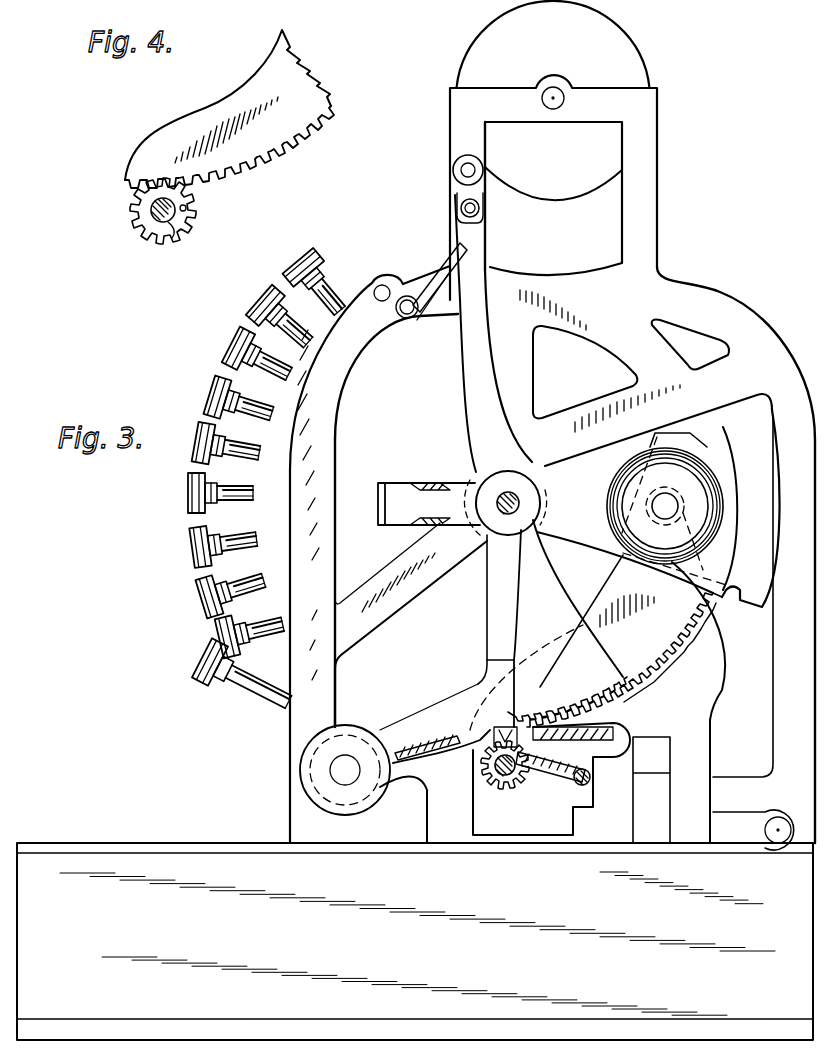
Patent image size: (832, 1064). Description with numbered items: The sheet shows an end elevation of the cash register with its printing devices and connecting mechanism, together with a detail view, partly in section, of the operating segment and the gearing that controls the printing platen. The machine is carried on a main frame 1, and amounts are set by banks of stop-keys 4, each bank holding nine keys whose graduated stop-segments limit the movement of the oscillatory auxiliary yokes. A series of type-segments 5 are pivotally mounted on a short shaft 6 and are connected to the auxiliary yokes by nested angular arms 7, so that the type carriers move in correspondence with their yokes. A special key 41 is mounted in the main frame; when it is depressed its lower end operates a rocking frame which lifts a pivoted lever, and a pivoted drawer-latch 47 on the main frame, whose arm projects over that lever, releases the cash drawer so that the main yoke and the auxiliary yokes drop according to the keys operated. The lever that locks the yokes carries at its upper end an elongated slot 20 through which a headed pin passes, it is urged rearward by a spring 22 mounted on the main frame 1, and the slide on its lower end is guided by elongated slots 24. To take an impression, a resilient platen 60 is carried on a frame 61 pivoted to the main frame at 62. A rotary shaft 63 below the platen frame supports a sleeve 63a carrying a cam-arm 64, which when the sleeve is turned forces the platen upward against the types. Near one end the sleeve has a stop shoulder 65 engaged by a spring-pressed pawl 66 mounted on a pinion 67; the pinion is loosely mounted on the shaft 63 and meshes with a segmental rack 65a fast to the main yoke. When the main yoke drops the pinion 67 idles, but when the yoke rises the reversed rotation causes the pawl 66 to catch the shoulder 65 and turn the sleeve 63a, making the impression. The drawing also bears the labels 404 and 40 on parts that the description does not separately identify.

In FIG. 3, the frame head 404 is at (570, 63).
In FIG. 3, the drawer-latch 47 is at (462, 171).
In FIG. 3, the pendulum arm 40 is at (460, 191).
In FIG. 3, the elongated slots 24 is at (460, 210).
In FIG. 3, the elongated slot 20 is at (477, 203).
In FIG. 3, the spring 22 is at (446, 262).
In FIG. 3, the stop-keys 4 is at (245, 342).
In FIG. 3, the main frame 1 is at (197, 588).
In FIG. 3, the special key 41 is at (254, 690).
In FIG. 3, the nested angular arms 7 is at (378, 500).
In FIG. 3, the short shaft 6 is at (522, 506).
In FIG. 3, the type-segments 5 is at (591, 625).
In FIG. 4, the segmental rack 65a is at (290, 143).
In FIG. 3, the segmental rack 65a is at (652, 690).
In FIG. 4, the stop shoulder 65 is at (160, 232).
In FIG. 4, the sleeve 63a is at (151, 208).
In FIG. 3, the sleeve 63a is at (505, 778).
In FIG. 4, the spring-pressed pawl 66 is at (175, 232).
In FIG. 4, the pinion 67 is at (180, 216).
In FIG. 3, the resilient platen 60 is at (505, 730).
In FIG. 3, the rotary shaft 63 is at (490, 778).
In FIG. 3, the cam-arm 64 is at (480, 763).
In FIG. 3, the platen frame 61 is at (567, 775).
In FIG. 3, the pivot 62 is at (588, 783).